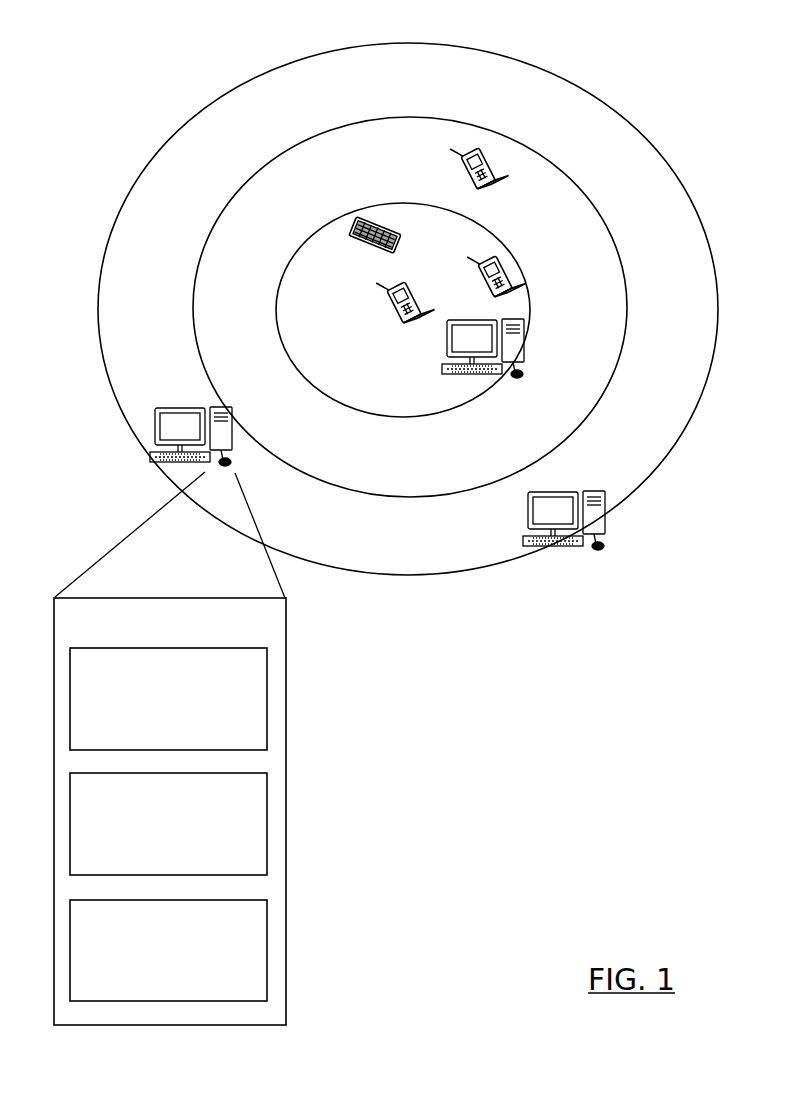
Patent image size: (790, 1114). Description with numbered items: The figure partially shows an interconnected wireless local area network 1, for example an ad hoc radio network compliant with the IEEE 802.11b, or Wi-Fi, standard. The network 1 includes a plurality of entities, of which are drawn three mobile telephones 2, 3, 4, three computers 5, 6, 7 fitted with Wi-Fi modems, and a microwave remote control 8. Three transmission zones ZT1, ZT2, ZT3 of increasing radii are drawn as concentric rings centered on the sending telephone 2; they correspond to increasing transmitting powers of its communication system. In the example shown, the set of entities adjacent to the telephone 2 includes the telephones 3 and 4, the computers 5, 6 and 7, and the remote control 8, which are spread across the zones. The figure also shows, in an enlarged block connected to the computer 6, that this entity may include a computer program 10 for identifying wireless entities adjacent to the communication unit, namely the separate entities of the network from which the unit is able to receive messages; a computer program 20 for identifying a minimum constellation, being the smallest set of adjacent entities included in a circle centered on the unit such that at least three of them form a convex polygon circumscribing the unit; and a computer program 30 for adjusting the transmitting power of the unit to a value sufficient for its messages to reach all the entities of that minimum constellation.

The interconnected wireless local area network 1 is at (255, 68).
The transmission zone ZT1 is at (305, 243).
The transmission zone ZT2 is at (257, 175).
The transmission zone ZT3 is at (218, 102).
The mobile telephone 2 is at (388, 316).
The mobile telephone 3 is at (506, 270).
The mobile telephone 4 is at (466, 183).
The computer 5 is at (520, 335).
The computer 6 is at (236, 422).
The computer 7 is at (528, 518).
The microwave remote control 8 is at (365, 250).
The computer program for identifying wireless entities 10 is at (168, 699).
The computer program for identifying a minimum constellation 20 is at (168, 824).
The computer program for adjusting the transmitting power 30 is at (168, 950).